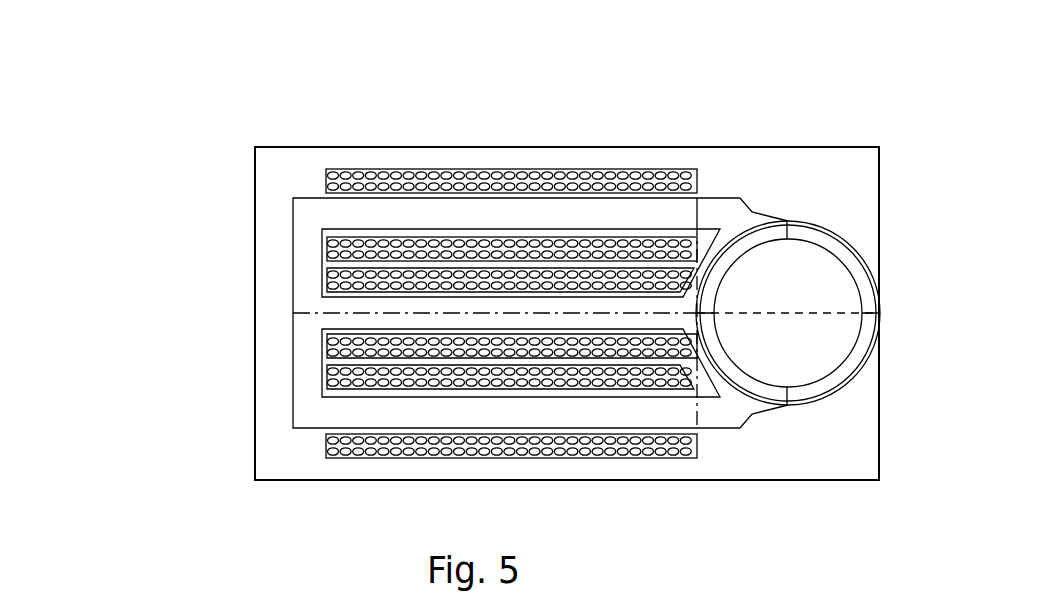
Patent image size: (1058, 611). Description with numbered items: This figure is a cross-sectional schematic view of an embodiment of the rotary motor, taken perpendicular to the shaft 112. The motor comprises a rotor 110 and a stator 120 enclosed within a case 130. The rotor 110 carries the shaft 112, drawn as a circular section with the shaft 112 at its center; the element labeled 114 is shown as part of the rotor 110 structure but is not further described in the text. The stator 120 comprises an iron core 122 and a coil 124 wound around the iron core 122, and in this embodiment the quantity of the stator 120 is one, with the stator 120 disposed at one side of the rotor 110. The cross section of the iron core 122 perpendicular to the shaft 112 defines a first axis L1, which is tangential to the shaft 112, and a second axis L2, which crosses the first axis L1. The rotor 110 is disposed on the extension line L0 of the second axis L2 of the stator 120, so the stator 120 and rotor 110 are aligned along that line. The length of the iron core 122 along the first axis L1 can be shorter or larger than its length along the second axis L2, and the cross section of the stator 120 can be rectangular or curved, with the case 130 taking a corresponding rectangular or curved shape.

The rotor 110 is at (812, 63).
The shaft 112 is at (760, 273).
The outer ring portion of ring member 114 is at (805, 233).
The stator 120 is at (180, 240).
The iron core 122 is at (303, 250).
The coil 124 is at (327, 283).
The case 130 is at (342, 147).
The extension line L0 is at (787, 315).
The first axis L1 is at (695, 216).
The second axis L2 is at (440, 307).